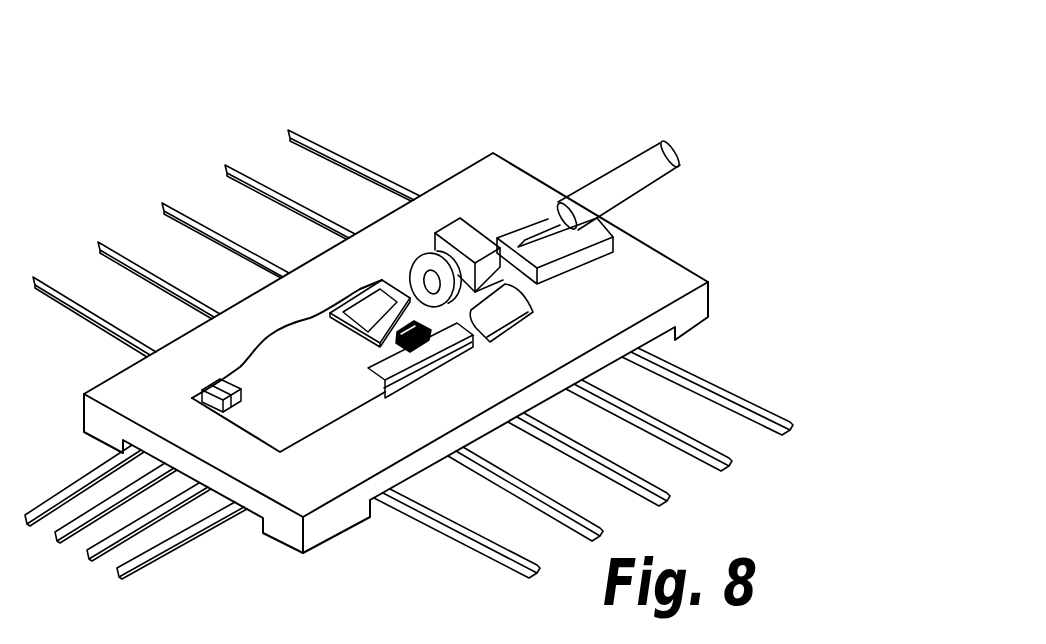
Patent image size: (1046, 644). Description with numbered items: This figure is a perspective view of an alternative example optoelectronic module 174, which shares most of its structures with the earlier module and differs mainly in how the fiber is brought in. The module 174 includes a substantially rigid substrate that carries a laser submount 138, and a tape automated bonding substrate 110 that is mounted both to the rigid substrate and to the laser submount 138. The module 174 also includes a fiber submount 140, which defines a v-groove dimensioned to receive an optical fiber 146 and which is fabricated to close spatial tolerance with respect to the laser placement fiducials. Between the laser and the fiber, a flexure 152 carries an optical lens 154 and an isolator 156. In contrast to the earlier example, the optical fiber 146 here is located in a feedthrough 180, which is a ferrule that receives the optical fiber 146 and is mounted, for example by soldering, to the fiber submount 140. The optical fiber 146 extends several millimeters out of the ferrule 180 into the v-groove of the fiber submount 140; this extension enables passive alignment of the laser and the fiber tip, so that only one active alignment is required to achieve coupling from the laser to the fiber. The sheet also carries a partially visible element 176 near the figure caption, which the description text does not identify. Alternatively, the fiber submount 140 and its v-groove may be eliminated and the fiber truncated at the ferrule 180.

The tape automated bonding (TAB) substrate 110 is at (283, 413).
The laser submount 138 is at (378, 392).
The fiber submount 140 is at (606, 192).
The optical fiber 146 is at (529, 242).
The flexure 152 is at (495, 321).
The optical lens 154 is at (418, 255).
The isolator 156 is at (454, 233).
The optoelectronic module 174 is at (622, 110).
The lid 176 is at (781, 640).
The feedthrough (ferrule) 180 is at (663, 162).